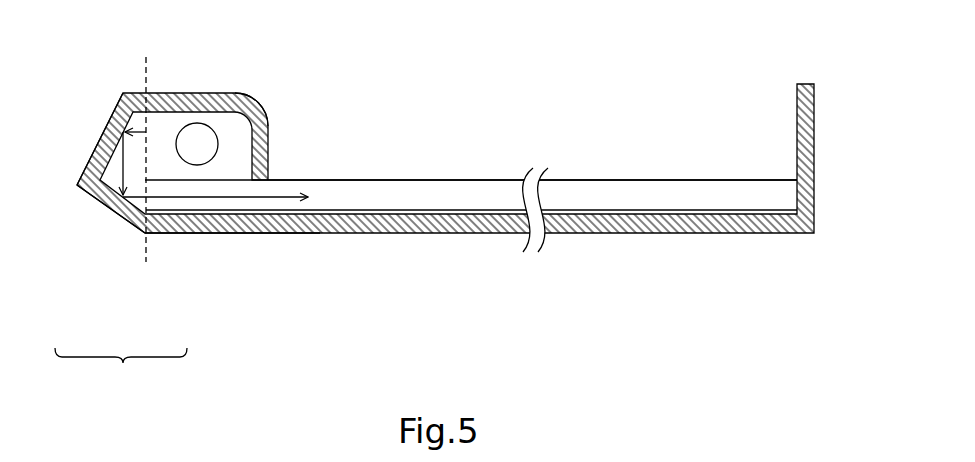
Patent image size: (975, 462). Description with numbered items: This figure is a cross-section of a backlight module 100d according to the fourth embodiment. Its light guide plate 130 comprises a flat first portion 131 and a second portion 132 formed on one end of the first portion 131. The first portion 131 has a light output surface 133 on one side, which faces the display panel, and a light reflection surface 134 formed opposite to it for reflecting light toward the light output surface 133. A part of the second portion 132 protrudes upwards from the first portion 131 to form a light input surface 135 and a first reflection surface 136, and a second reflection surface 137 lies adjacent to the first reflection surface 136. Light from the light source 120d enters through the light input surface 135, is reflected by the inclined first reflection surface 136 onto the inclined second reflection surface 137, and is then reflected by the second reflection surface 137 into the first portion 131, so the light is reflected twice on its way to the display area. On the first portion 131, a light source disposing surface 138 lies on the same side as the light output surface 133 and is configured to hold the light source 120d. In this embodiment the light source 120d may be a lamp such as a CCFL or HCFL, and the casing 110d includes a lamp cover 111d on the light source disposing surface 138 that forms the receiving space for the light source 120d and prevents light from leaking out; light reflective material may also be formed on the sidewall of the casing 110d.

The backlight module 100d is at (475, 208).
The casing 110d is at (810, 147).
The lamp cover 111d is at (258, 102).
The light source 120d is at (198, 130).
The light guide plate 130 is at (121, 372).
The first portion 131 is at (187, 247).
The second portion 132 is at (108, 245).
The light output surface 133 is at (642, 178).
The light reflection surface 134 is at (623, 212).
The light input surface 135 is at (147, 152).
The first reflection surface 136 is at (115, 145).
The second reflection surface 137 is at (138, 205).
The light source disposing surface 138 is at (220, 178).